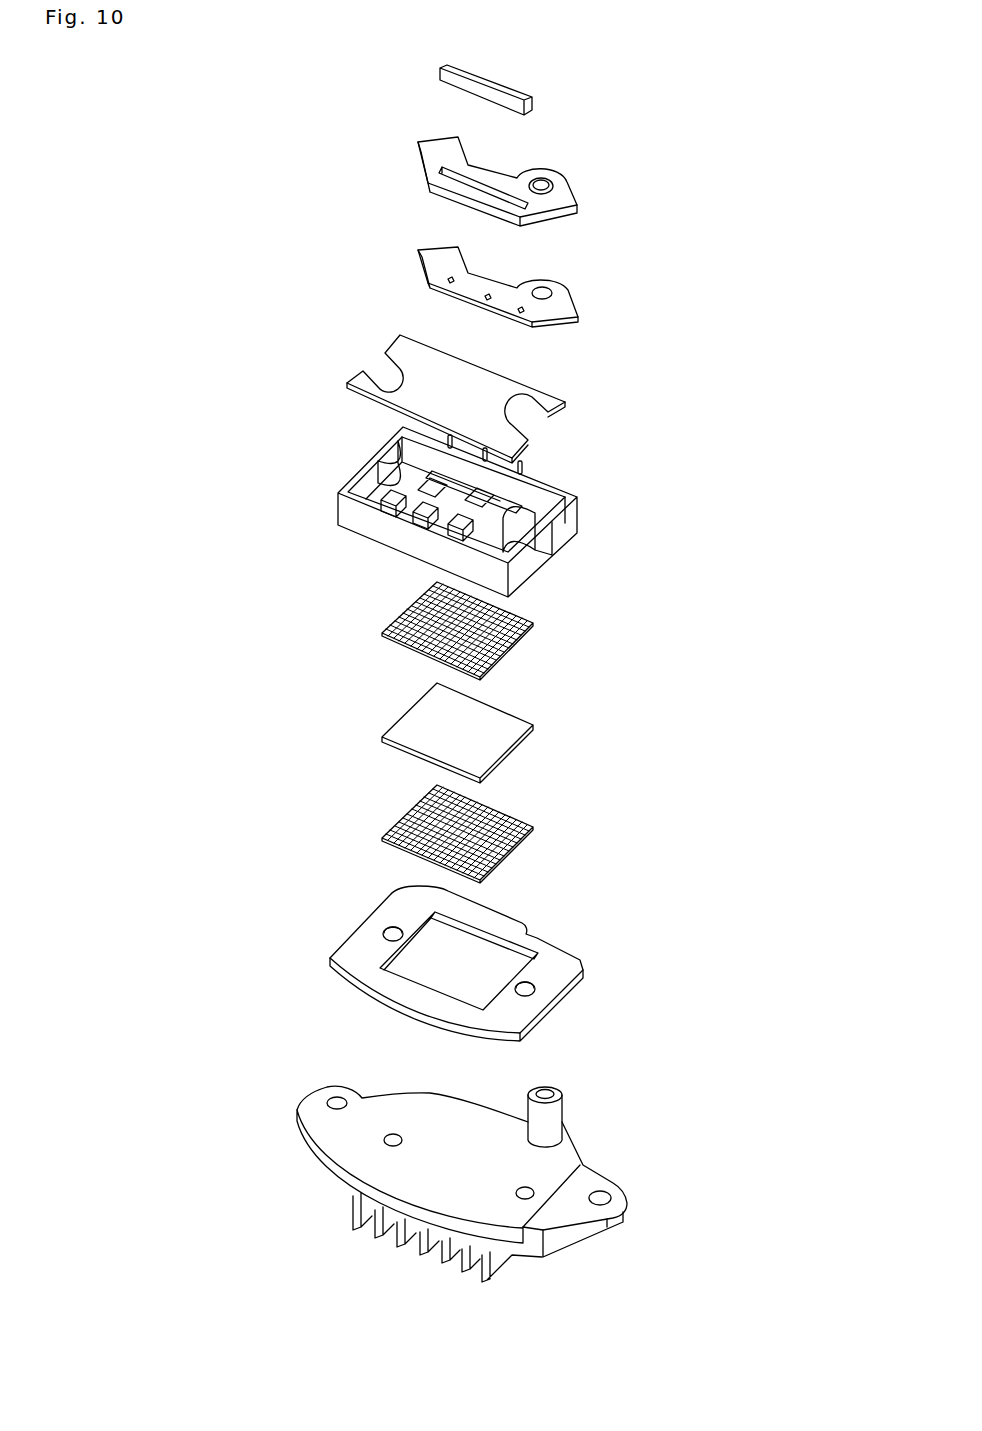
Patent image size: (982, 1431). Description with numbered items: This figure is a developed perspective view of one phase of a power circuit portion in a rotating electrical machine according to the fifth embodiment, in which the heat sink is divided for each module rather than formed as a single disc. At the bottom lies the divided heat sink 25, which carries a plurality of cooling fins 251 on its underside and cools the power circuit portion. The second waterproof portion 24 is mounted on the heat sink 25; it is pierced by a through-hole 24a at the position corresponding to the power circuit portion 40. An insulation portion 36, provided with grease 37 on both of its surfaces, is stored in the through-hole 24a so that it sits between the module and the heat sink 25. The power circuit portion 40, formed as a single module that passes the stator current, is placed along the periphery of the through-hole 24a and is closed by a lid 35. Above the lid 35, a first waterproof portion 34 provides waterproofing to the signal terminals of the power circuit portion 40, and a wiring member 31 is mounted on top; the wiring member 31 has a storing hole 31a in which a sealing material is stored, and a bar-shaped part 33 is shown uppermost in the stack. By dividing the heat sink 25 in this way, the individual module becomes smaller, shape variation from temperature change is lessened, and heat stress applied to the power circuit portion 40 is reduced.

The bar 33 is at (512, 93).
The wiring member 31 is at (560, 193).
The storing hole 31a is at (487, 188).
The first waterproof portion 34 is at (560, 303).
The lid 35 is at (508, 392).
The power circuit portion 40 is at (570, 517).
The grease 37 is at (520, 614).
The insulation portion 36 is at (505, 722).
The second waterproof portion 24 is at (508, 951).
The through-hole 24a is at (412, 918).
The heat sink 25 is at (484, 1184).
The cooling fin 251 is at (418, 1248).